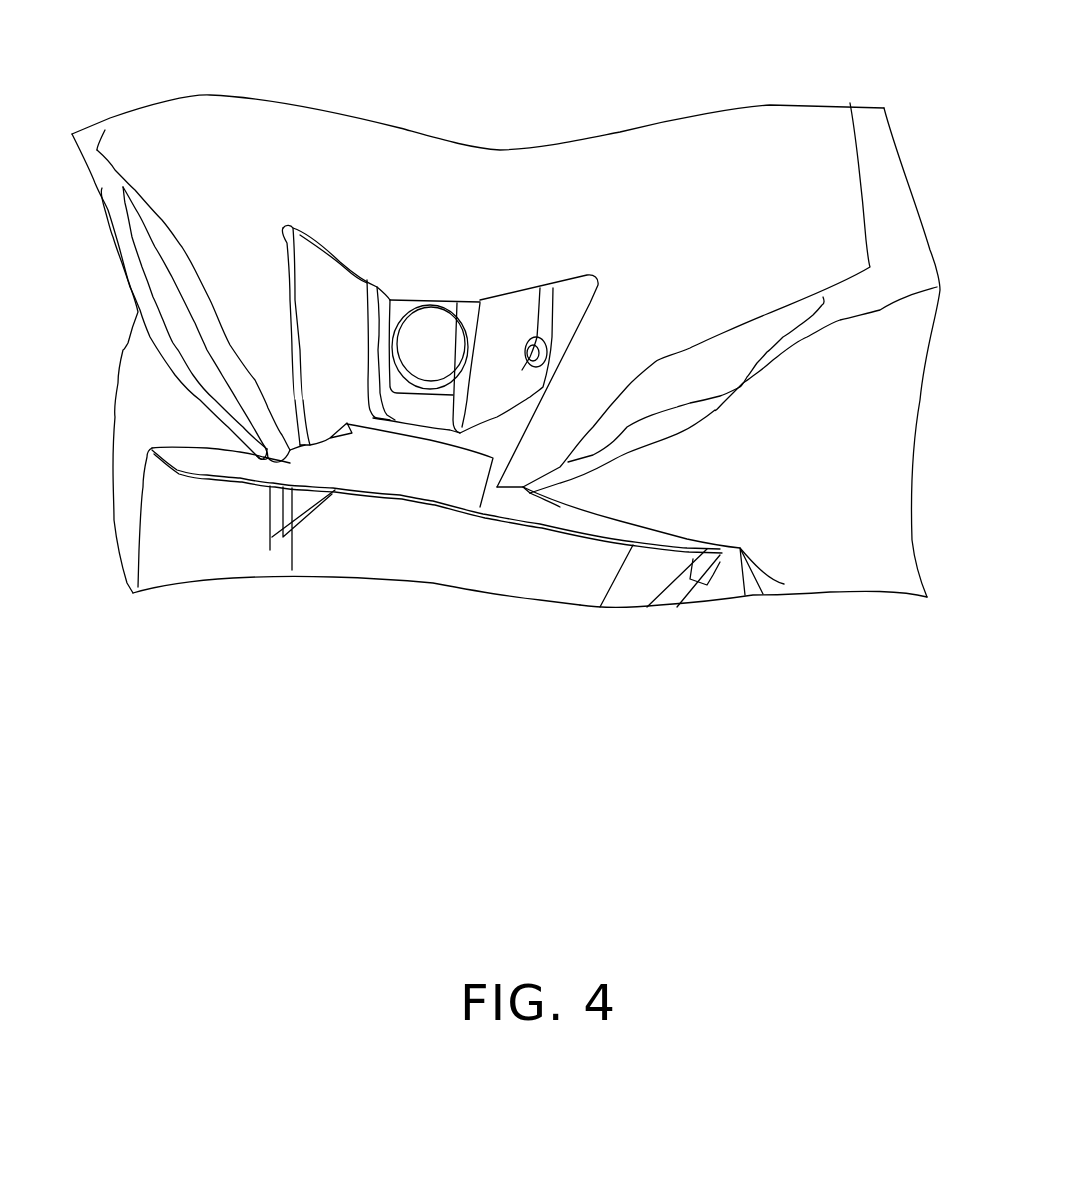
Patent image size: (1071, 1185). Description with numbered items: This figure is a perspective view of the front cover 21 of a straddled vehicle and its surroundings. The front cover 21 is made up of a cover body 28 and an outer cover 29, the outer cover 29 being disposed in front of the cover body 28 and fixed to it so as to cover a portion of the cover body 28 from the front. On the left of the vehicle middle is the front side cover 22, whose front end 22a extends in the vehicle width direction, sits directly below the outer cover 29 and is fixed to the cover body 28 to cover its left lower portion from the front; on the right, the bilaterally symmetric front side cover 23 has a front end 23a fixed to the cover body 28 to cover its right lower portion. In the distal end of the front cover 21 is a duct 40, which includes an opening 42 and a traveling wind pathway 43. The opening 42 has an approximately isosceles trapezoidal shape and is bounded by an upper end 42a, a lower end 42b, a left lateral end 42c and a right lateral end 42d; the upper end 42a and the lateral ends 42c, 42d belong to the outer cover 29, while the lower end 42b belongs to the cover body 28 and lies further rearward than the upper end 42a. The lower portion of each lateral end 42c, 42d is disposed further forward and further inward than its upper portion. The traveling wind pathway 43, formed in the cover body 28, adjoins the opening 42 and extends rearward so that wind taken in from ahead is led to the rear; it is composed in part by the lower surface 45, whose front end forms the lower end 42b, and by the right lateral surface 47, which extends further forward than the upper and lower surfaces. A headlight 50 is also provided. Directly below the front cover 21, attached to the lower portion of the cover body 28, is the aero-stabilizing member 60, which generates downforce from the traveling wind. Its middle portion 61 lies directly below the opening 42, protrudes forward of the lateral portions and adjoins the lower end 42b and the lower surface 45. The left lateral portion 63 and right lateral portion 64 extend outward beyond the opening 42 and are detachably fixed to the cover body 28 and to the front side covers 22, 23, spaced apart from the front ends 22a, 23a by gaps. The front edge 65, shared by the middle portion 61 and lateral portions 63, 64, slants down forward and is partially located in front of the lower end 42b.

The front cover 21 is at (777, 123).
The front side cover 22 is at (880, 560).
The front end 22a is at (633, 493).
The front side cover 23 is at (137, 583).
The front end 23a is at (208, 433).
The cover body 28 is at (857, 313).
The outer cover 29 is at (320, 140).
The duct 40 is at (355, 447).
The opening 42 is at (287, 322).
The upper end 42a is at (333, 293).
The lower end 42b is at (440, 453).
The left lateral end 42c is at (582, 325).
The right lateral end 42d is at (297, 380).
The traveling wind pathway 43 is at (489, 447).
The lower surface 45 is at (300, 423).
The right lateral surface 47 is at (330, 398).
The headlight 50 is at (433, 347).
The aero-stabilizing member 60 is at (580, 537).
The middle portion 61 is at (395, 467).
The left lateral portion 63 is at (537, 510).
The right lateral portion 64 is at (250, 467).
The front edge 65 is at (290, 500).